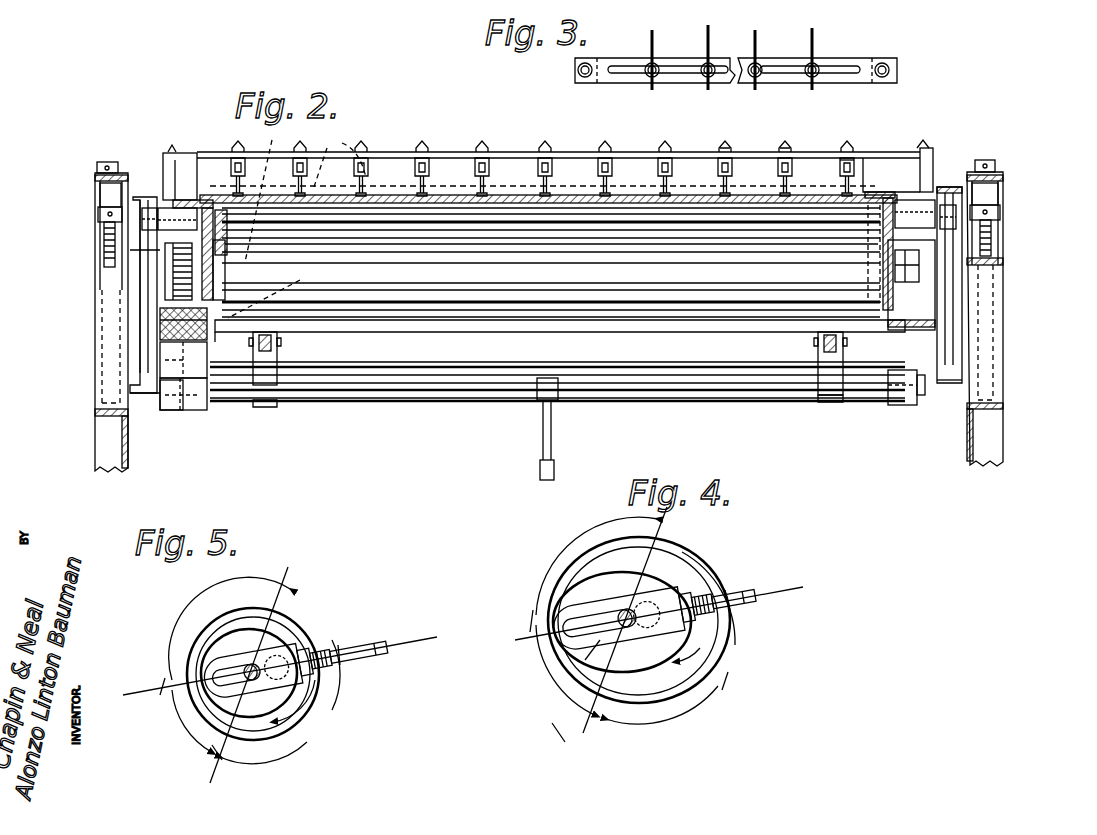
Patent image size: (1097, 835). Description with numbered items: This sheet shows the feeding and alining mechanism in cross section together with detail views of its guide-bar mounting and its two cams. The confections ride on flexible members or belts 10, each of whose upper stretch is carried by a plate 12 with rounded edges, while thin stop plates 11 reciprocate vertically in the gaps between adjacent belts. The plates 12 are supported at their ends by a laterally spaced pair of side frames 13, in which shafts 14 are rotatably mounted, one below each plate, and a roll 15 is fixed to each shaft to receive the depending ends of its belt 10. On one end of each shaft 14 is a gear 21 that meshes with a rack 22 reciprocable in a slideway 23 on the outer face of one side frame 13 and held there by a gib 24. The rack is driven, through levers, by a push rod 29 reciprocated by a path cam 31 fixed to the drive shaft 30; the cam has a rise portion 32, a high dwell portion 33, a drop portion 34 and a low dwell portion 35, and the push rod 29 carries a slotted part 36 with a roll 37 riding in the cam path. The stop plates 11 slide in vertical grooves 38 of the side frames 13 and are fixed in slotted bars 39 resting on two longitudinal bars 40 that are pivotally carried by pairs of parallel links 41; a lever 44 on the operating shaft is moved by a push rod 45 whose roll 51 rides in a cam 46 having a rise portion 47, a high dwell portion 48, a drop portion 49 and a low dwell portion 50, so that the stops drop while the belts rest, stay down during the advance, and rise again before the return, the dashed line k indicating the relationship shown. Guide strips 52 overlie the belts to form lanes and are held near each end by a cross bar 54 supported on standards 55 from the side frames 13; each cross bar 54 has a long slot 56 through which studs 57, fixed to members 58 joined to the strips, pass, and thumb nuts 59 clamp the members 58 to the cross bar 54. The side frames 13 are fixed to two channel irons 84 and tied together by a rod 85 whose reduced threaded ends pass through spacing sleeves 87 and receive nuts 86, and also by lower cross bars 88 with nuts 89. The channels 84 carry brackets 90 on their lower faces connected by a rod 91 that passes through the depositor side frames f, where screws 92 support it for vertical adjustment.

In FIG. 2, the flexible members or belts 10 is at (562, 190).
In FIG. 2, the stop plates 11 is at (508, 186).
In FIG. 2, the plate 12 is at (188, 200).
In FIG. 2, the side frames 13 is at (172, 306).
In FIG. 2, the shafts 14 is at (222, 270).
In FIG. 2, the roll 15 is at (547, 261).
In FIG. 2, the gear 21 is at (182, 274).
In FIG. 2, the rack 22 is at (203, 346).
In FIG. 2, the slideway 23 is at (276, 291).
In FIG. 2, the gib 24 is at (165, 328).
In FIG. 4, the push rod 29 is at (745, 593).
In FIG. 4, the drive shaft 30 is at (627, 618).
In FIG. 5, the drive shaft 30 is at (205, 640).
In FIG. 4, the cam 31 is at (670, 555).
In FIG. 4, the rise portion 32 is at (660, 525).
In FIG. 4, the high dwell portion 33 is at (597, 715).
In FIG. 4, the drop portion 34 is at (718, 687).
In FIG. 4, the low dwell portion 35 is at (712, 615).
In FIG. 4, the part 36 is at (627, 618).
In FIG. 4, the roll 37 is at (672, 600).
In FIG. 2, the vertical grooves 38 is at (264, 189).
In FIG. 2, the bar 39 is at (432, 322).
In FIG. 2, the bars 40 is at (277, 340).
In FIG. 2, the parallel links 41 is at (270, 372).
In FIG. 2, the lever 44 is at (547, 430).
In FIG. 5, the push rod 45 is at (378, 648).
In FIG. 5, the cam 46 is at (288, 600).
In FIG. 5, the rise portion 47 is at (290, 640).
In FIG. 5, the high dwell portion 48 is at (285, 598).
In FIG. 5, the drop portion 49 is at (213, 753).
In FIG. 5, the low dwell portion 50 is at (332, 690).
In FIG. 5, the roll 51 is at (288, 652).
In FIG. 3, the guide strips 52 is at (815, 52).
In FIG. 2, the guide strips 52 is at (667, 177).
In FIG. 3, the cross bar 54 is at (868, 63).
In FIG. 2, the cross bar 54 is at (632, 158).
In FIG. 2, the standards 55 is at (165, 175).
In FIG. 3, the slot 56 is at (850, 72).
In FIG. 3, the studs 57 is at (712, 63).
In FIG. 2, the member 58 is at (840, 160).
In FIG. 3, the thumb nuts 59 is at (656, 64).
In FIG. 2, the thumb nuts 59 is at (783, 145).
In FIG. 2, the channel irons 84 is at (146, 197).
In FIG. 2, the rod 85 is at (583, 210).
In FIG. 2, the nuts 86 is at (145, 216).
In FIG. 2, the spacing sleeve 87 is at (182, 196).
In FIG. 2, the cross bars 88 is at (358, 398).
In FIG. 2, the nuts 89 is at (166, 412).
In FIG. 2, the brackets 90 is at (148, 395).
In FIG. 2, the rod 91 is at (222, 408).
In FIG. 2, the screws 92 is at (108, 247).
In FIG. 2, the side frames f is at (105, 443).
In FIG. 2, the line k is at (339, 158).